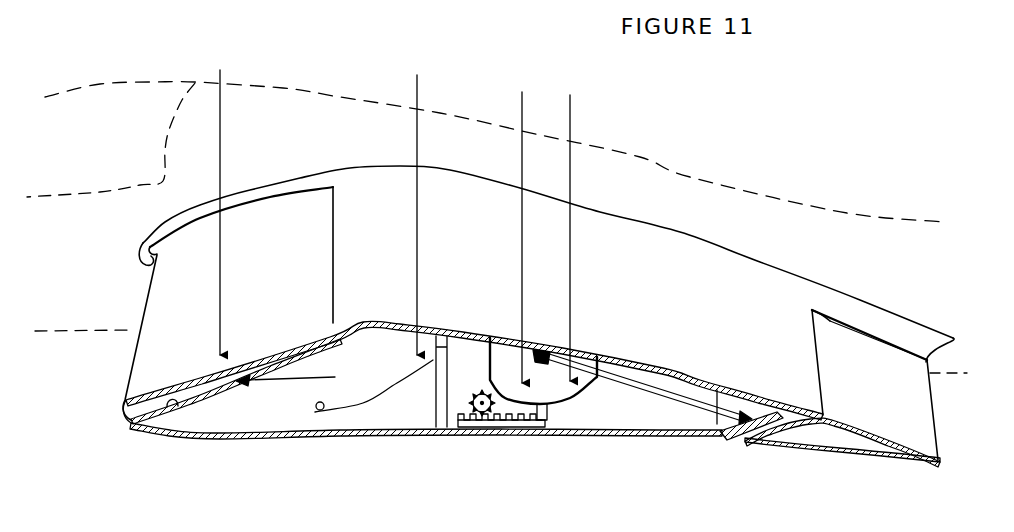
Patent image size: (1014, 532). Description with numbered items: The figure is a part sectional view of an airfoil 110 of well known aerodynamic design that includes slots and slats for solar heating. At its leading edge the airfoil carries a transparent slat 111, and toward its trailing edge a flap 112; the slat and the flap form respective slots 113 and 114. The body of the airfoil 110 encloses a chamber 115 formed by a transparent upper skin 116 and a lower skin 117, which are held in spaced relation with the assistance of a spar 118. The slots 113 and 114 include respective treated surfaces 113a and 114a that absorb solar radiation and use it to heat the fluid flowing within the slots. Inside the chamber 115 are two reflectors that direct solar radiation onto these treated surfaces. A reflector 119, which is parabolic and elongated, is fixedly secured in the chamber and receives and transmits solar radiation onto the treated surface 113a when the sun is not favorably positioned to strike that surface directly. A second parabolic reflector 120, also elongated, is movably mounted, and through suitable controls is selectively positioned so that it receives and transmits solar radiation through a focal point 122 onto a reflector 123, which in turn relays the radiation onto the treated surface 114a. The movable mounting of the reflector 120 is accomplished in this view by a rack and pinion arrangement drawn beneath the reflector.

The airfoil 110 is at (442, 202).
The transparent slat 111 is at (258, 252).
The flap 112 is at (862, 350).
The slot 113 is at (197, 383).
The treated surface 113a is at (127, 393).
The slot 114 is at (826, 420).
The treated surface 114a is at (768, 443).
The chamber 115 is at (634, 410).
The transparent upper skin 116 is at (616, 353).
The lower skin 117 is at (245, 437).
The spar 118 is at (444, 395).
The reflector 119 is at (323, 412).
The parabolic reflector 120 is at (530, 417).
The focal point 122 is at (543, 360).
The reflector 123 is at (538, 342).